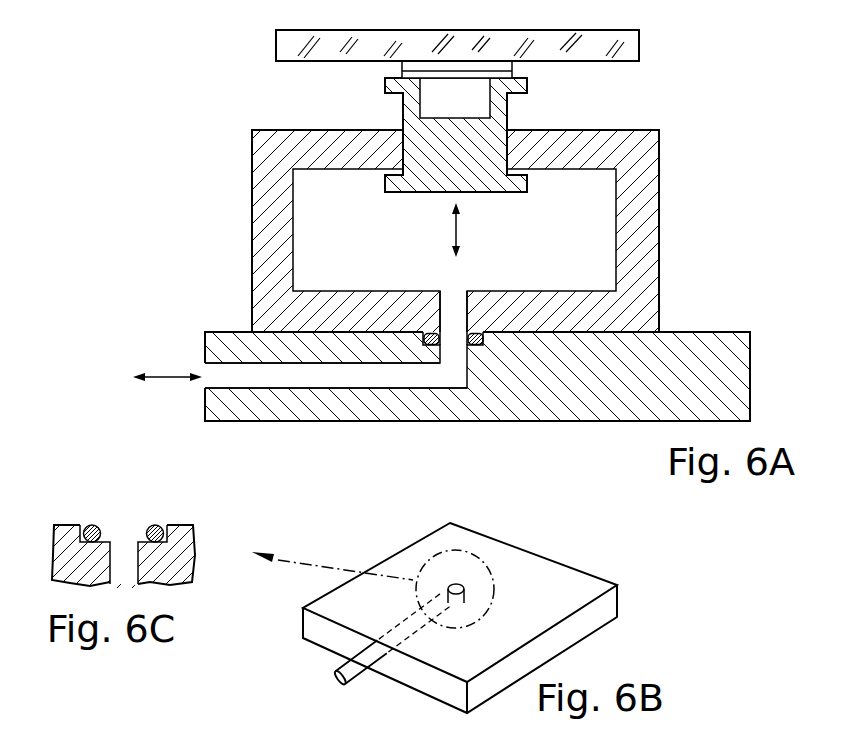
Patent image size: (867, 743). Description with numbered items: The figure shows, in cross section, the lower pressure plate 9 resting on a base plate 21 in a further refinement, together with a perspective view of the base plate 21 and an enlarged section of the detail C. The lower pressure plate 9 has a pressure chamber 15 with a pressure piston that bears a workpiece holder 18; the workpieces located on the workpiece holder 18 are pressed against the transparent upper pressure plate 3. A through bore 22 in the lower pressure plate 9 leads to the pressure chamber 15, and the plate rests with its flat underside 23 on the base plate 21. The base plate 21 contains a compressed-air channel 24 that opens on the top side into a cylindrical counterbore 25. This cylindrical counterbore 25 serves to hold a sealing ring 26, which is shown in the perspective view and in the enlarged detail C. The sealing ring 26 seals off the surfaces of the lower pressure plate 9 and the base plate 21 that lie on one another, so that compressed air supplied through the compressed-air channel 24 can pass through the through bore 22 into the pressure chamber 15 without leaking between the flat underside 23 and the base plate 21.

In FIG. 6A, the transparent upper pressure plate 3 is at (627, 43).
In FIG. 6A, the workpiece holder 18 is at (527, 83).
In FIG. 6A, the pressure chamber 15 is at (607, 190).
In FIG. 6A, the lower pressure plate 9 is at (650, 227).
In FIG. 6A, the through bore 22 is at (458, 313).
In FIG. 6A, the sealing ring 26 is at (428, 331).
In FIG. 6C, the sealing ring 26 is at (95, 527).
In FIG. 6A, the cylindrical counterbore 25 is at (453, 340).
In FIG. 6C, the cylindrical counterbore 25 is at (145, 528).
In FIG. 6A, the compressed-air channel 24 is at (225, 368).
In FIG. 6C, the compressed-air channel 24 is at (122, 557).
In FIG. 6A, the flat underside 23 is at (640, 330).
In FIG. 6A, the base plate 21 is at (742, 365).
In FIG. 6B, the base plate 21 is at (565, 580).
In FIG. 6C, the base plate 21 is at (70, 528).
In FIG. 6B, the detail C is at (490, 567).